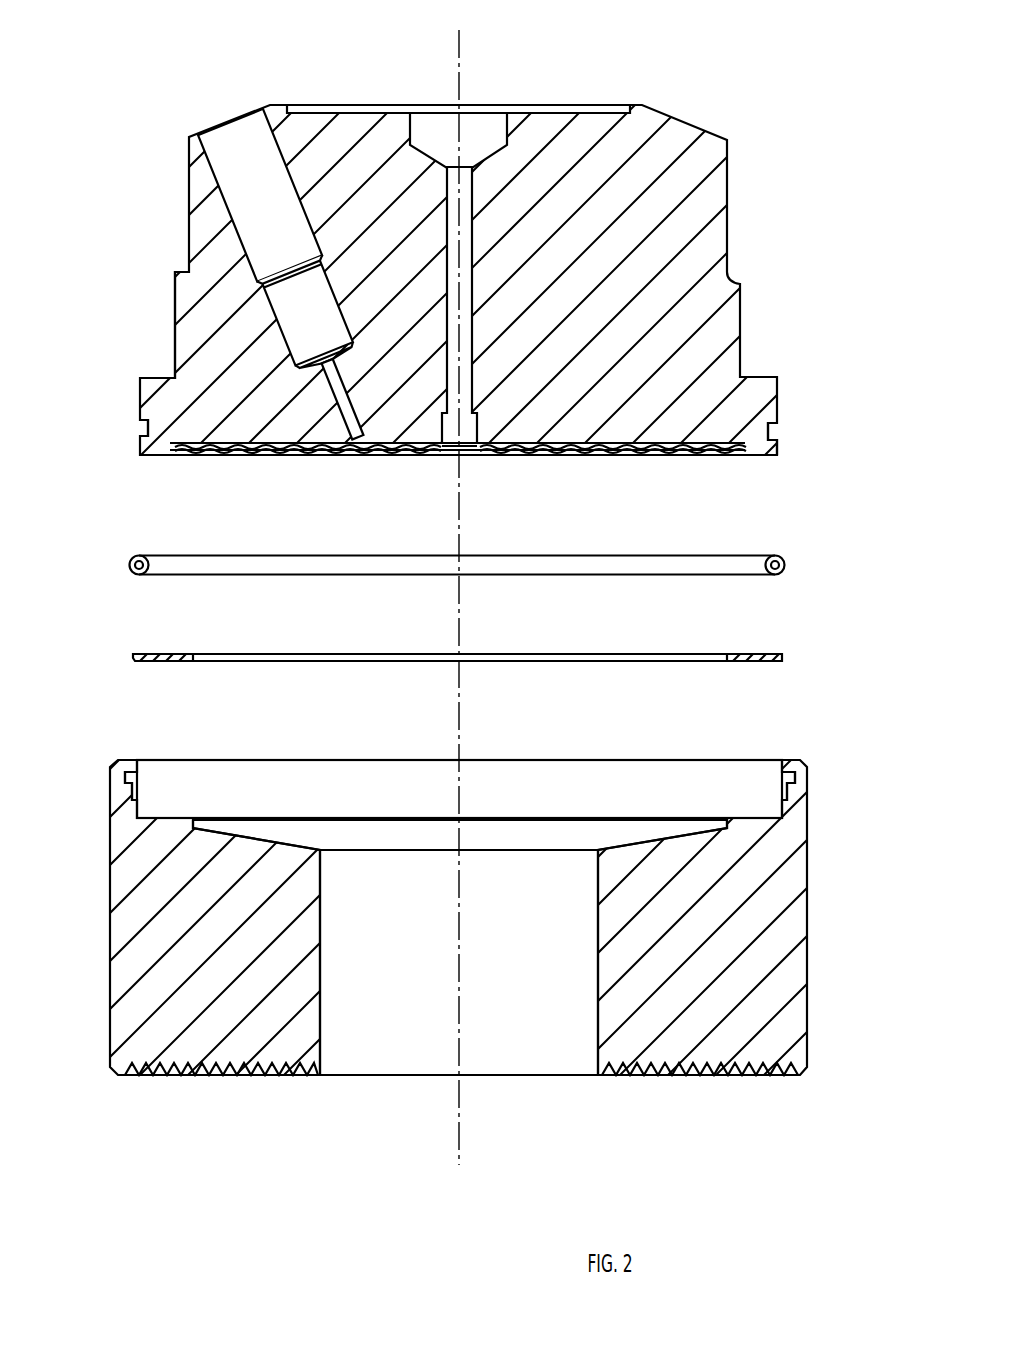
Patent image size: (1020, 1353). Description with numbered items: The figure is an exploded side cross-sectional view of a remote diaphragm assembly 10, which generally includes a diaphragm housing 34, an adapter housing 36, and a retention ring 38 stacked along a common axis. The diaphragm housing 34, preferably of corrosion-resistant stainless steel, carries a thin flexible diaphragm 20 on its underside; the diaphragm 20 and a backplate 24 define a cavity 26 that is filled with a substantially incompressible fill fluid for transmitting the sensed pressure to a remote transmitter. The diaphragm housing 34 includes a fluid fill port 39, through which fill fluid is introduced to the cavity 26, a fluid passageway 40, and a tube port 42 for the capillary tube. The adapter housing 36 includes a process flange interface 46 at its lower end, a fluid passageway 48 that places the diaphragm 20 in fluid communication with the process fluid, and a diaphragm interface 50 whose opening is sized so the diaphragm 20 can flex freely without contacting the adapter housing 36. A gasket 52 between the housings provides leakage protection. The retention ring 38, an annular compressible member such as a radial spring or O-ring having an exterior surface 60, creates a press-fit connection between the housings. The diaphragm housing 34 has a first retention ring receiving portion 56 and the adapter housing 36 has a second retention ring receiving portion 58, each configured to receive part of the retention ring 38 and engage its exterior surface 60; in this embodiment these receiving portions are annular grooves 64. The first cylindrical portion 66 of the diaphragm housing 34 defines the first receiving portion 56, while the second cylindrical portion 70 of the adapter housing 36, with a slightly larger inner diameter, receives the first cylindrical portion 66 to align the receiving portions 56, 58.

The remote diaphragm assembly 10 is at (707, 60).
The diaphragm 20 is at (327, 452).
The backplate 24 is at (585, 450).
The cavity 26 is at (493, 450).
The diaphragm housing 34 is at (728, 217).
The adapter housing 36 is at (808, 852).
The retention ring 38 is at (749, 556).
The fluid fill port 39 is at (230, 140).
The fluid passageway 40 is at (452, 180).
The tube port 42 is at (487, 123).
The process flange interface 46 is at (705, 1077).
The fluid passageway 48 is at (361, 1055).
The diaphragm interface 50 is at (552, 816).
The gasket 52 is at (750, 656).
The first retention ring receiving portion 56 is at (137, 430).
The second retention ring receiving portion 58 is at (126, 785).
The exterior surface 60 is at (459, 534).
The annular grooves 64 is at (781, 441).
The first cylindrical portion 66 is at (140, 380).
The second cylindrical portion 70 is at (326, 780).